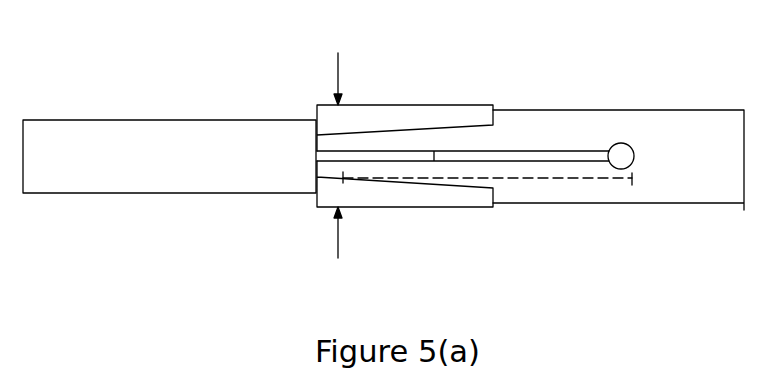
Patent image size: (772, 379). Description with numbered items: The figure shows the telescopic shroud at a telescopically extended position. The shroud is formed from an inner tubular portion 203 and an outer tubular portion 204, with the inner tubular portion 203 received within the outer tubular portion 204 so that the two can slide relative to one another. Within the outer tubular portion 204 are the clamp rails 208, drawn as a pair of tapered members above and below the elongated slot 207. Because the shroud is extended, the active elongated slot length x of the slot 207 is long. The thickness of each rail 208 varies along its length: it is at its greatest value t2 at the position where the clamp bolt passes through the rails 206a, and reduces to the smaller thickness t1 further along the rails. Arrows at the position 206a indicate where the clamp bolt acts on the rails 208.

The inner tubular portion 203 is at (148, 137).
The outer tubular portion 204 is at (632, 123).
The position where the clamp bolt passes through the rails 206a is at (338, 83).
The elongated slot 207 is at (507, 153).
The clamp rails 208 is at (375, 118).
The rail thickness t1 is at (522, 277).
The greatest rail thickness t2 is at (255, 242).
The active elongated slot length x is at (557, 178).